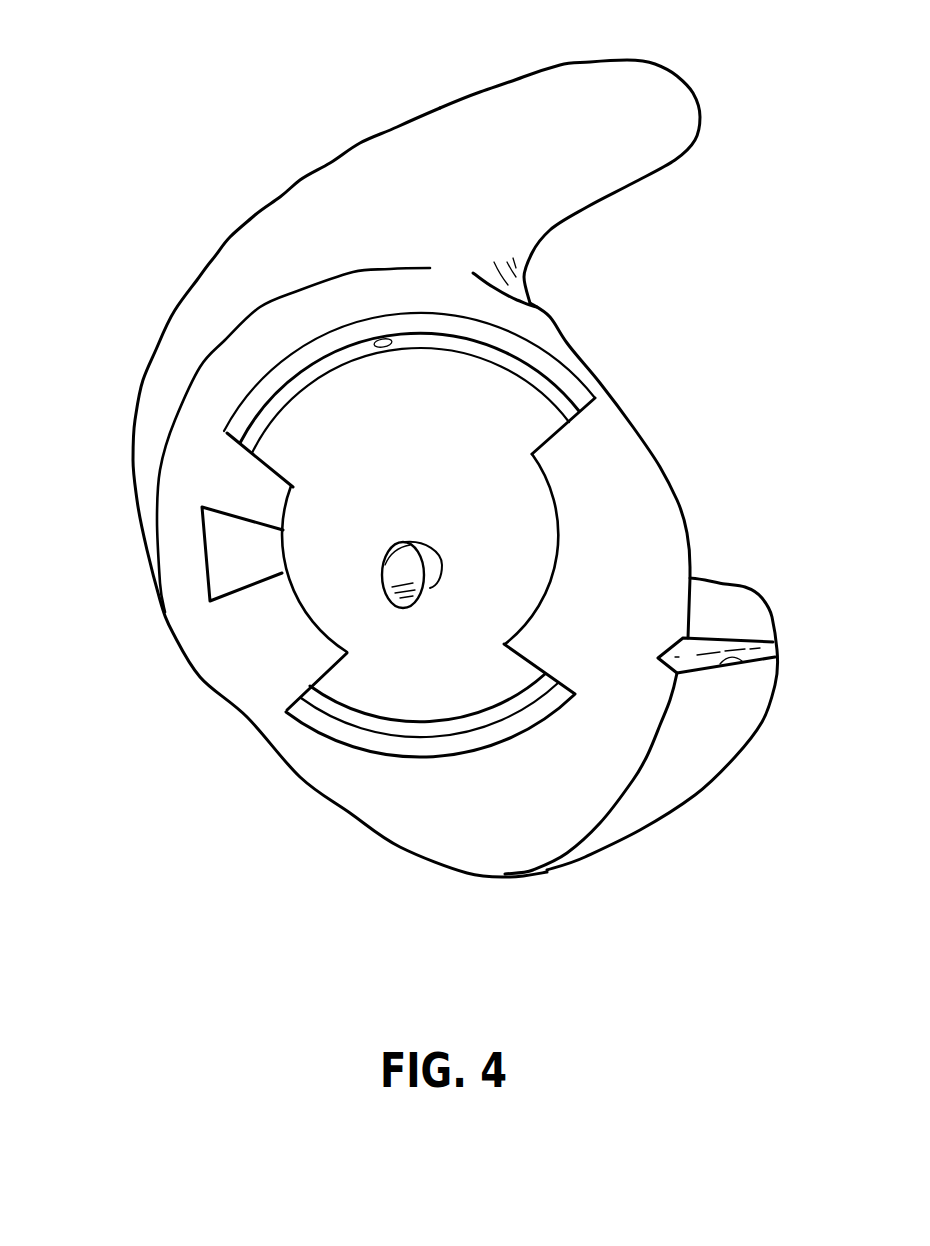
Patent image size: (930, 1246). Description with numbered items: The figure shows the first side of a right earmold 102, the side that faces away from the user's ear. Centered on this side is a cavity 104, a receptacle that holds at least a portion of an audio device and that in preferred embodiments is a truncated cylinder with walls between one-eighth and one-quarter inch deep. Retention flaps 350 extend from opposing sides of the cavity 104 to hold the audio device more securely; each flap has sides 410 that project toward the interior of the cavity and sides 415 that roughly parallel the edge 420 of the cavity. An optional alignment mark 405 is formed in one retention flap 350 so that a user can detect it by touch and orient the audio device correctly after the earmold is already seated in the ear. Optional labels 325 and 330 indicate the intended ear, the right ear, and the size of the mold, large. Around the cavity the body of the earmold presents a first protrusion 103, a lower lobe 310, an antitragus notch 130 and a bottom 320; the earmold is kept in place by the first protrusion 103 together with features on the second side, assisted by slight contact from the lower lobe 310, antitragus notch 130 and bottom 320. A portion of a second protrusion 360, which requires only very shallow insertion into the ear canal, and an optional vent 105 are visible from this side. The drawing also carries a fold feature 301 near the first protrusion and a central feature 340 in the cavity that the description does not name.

The right earmold 102 is at (690, 358).
The first protrusion 103 is at (657, 90).
The cavity 104 is at (375, 338).
The vent 105 is at (750, 660).
The antitragus notch 130 is at (300, 777).
The fold line 301 is at (528, 315).
The lower lobe 310 is at (550, 875).
The bottom 320 is at (200, 670).
The label 325 is at (340, 400).
The label 330 is at (368, 690).
The center knob 340 is at (385, 588).
The retention flaps 350 is at (580, 520).
The second protrusion 360 is at (750, 704).
The alignment mark 405 is at (217, 556).
The sides 410 is at (555, 440).
The sides 415 is at (540, 600).
The edge 420 is at (250, 400).